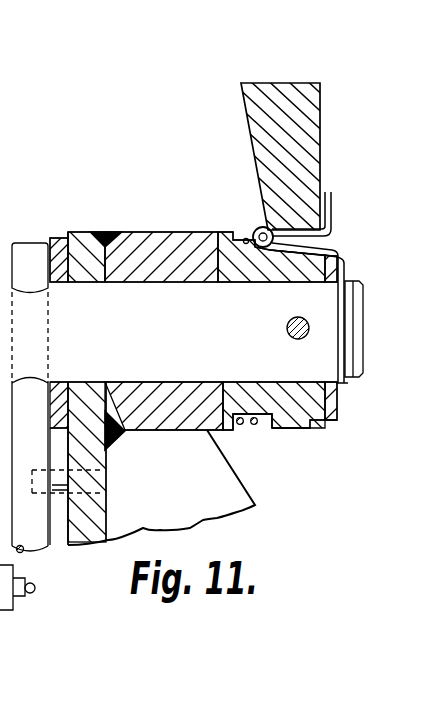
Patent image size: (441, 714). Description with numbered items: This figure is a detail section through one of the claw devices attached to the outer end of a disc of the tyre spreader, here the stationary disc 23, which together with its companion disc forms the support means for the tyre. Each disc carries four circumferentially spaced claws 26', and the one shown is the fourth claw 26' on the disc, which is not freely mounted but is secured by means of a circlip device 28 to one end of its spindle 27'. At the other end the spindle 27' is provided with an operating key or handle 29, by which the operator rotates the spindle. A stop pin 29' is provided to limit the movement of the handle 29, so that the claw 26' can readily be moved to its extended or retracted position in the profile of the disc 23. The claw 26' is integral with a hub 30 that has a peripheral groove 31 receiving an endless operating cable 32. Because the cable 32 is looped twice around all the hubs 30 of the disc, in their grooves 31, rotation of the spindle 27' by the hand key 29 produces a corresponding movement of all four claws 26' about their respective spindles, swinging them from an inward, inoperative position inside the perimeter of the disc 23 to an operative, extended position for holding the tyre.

The operating key or handle 29 is at (29, 380).
The spindle 27' is at (193, 341).
The disc 23 is at (93, 522).
The stop pin 29' is at (68, 500).
The claw 26' is at (305, 155).
The endless operating cable 32 is at (257, 228).
The circlip device 28 is at (350, 276).
The hub 30 is at (310, 428).
The peripheral groove 31 is at (262, 428).